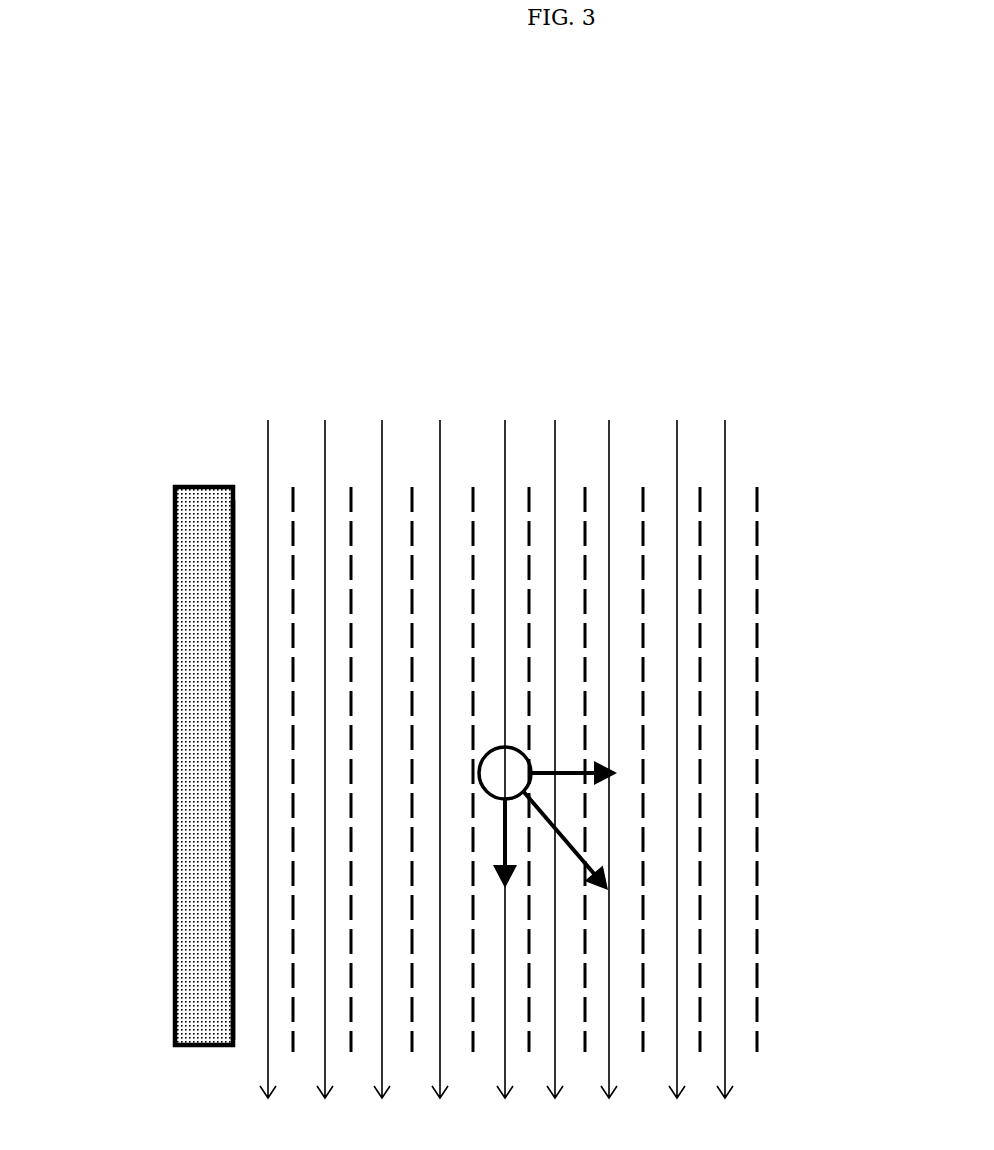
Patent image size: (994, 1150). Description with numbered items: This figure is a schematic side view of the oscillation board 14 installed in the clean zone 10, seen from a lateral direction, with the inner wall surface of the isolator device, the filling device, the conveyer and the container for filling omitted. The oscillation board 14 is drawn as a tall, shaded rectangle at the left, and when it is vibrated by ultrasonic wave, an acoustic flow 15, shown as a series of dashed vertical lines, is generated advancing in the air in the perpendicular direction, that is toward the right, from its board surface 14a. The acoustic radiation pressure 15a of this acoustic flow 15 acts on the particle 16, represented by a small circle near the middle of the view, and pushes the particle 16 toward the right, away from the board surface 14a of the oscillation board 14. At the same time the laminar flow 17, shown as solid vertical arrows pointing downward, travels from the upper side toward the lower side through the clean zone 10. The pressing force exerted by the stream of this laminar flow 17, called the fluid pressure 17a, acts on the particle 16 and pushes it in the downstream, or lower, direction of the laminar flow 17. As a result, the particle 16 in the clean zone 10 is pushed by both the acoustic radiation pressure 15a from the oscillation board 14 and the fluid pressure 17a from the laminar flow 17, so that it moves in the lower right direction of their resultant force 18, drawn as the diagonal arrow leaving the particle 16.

The clean zone 10 is at (796, 386).
The oscillation board 14 is at (205, 717).
The board surface 14a is at (233, 840).
The acoustic flow 15 is at (756, 620).
The acoustic radiation pressure 15a is at (561, 770).
The particle 16 is at (503, 747).
The laminar flow 17 is at (607, 447).
The fluid pressure 17a is at (500, 842).
The resultant force 18 is at (582, 858).